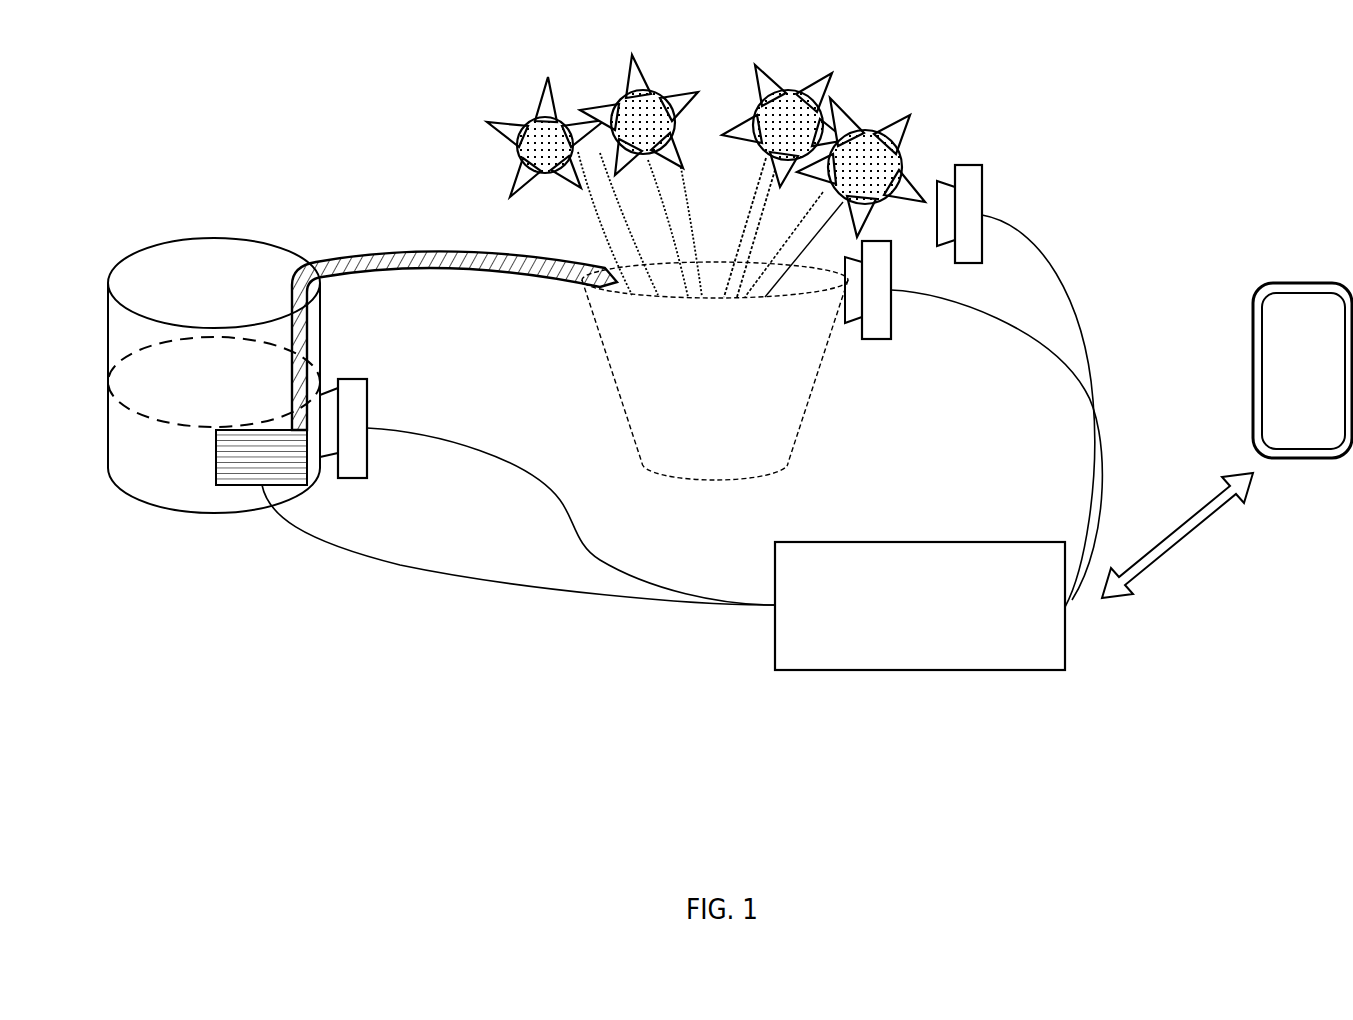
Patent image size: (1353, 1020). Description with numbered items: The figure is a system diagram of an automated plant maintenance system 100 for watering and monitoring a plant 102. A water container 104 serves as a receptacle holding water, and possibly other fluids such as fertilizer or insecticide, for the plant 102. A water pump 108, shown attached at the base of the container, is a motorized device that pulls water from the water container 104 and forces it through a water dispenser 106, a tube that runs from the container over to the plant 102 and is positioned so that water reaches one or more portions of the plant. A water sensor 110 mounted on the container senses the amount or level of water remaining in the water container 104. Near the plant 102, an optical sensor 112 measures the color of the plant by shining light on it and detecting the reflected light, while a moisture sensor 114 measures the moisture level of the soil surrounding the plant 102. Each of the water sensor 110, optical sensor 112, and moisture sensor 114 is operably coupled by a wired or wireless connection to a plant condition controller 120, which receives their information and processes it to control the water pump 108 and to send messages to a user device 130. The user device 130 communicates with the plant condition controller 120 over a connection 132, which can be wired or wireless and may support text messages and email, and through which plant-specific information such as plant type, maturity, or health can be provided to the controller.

The automated plant maintenance system 100 is at (340, 80).
The plant 102 is at (706, 256).
The water container 104 is at (182, 375).
The water dispenser 106 is at (454, 322).
The water pump 108 is at (495, 517).
The water sensor 110 is at (547, 492).
The optical sensor 112 is at (1016, 386).
The moisture sensor 114 is at (973, 420).
The plant condition controller 120 is at (920, 606).
The user device 130 is at (1302, 370).
The connection 132 is at (1177, 535).